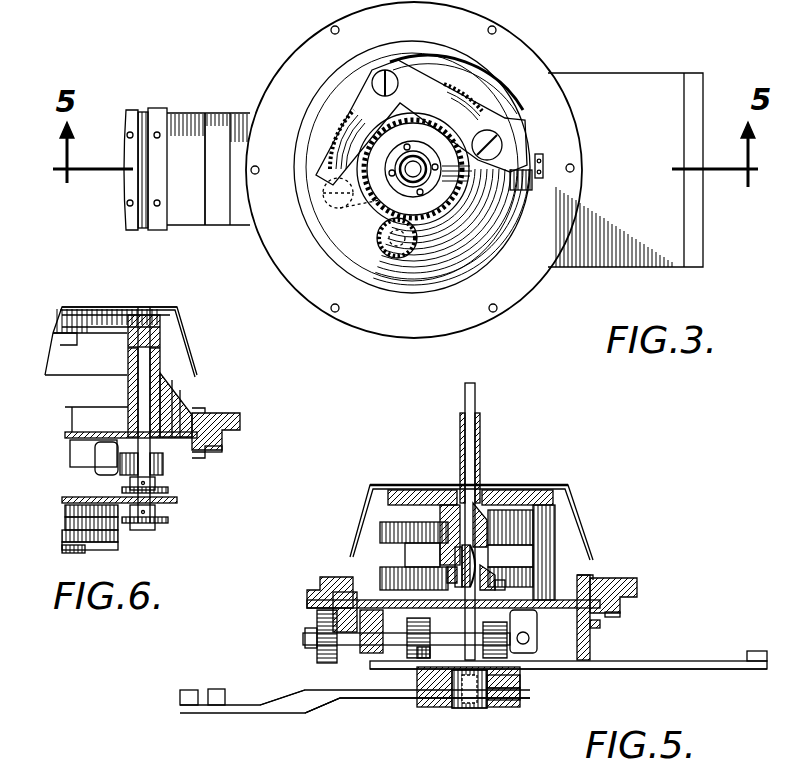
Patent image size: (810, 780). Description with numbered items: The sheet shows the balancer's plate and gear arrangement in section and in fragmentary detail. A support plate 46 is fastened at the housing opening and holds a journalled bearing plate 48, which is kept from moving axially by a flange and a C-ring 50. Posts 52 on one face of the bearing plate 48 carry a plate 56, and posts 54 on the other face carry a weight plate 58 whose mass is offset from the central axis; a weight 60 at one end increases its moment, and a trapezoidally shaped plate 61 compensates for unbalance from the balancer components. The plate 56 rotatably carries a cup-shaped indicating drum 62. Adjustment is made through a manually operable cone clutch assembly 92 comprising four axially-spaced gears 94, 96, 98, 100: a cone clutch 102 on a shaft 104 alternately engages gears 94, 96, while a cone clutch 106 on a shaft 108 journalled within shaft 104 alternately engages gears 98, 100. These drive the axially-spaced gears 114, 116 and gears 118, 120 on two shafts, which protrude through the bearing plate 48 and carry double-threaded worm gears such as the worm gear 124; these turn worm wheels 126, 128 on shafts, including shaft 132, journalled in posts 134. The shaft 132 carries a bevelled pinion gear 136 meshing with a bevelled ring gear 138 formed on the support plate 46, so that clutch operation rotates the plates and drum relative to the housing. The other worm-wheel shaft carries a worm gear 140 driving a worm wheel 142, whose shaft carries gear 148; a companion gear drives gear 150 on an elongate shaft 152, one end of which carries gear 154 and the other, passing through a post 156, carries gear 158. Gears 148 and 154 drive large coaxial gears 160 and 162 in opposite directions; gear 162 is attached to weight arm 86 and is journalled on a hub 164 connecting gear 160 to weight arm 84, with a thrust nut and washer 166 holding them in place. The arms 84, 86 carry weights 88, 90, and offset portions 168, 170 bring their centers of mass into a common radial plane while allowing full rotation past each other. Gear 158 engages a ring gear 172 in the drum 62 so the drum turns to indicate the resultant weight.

In FIG. 3, the support plate 46 is at (523, 38).
In FIG. 6, the support plate 46 is at (238, 415).
In FIG. 5, the support plate 46 is at (635, 577).
In FIG. 3, the bearing plate 48 is at (497, 82).
In FIG. 6, the bearing plate 48 is at (205, 460).
In FIG. 5, the bearing plate 48 is at (600, 627).
In FIG. 3, the C-ring 50 is at (540, 154).
In FIG. 6, the C-ring 50 is at (200, 412).
In FIG. 5, the C-ring 50 is at (593, 575).
In FIG. 3, the posts 52 is at (447, 50).
In FIG. 5, the posts 52 is at (560, 540).
In FIG. 5, the posts 54 is at (590, 650).
In FIG. 3, the plate 56 is at (364, 111).
In FIG. 6, the plate 56 is at (77, 334).
In FIG. 5, the plate 56 is at (567, 484).
In FIG. 3, the weight plate 58 is at (625, 170).
In FIG. 6, the weight plate 58 is at (175, 500).
In FIG. 5, the weight plate 58 is at (705, 661).
In FIG. 3, the weight 60 is at (684, 97).
In FIG. 5, the weight 60 is at (757, 645).
In FIG. 5, the trapezoidally shaped plate 61 is at (610, 670).
In FIG. 3, the indicating drum 62 is at (310, 236).
In FIG. 6, the indicating drum 62 is at (193, 333).
In FIG. 5, the indicating drum 62 is at (578, 498).
In FIG. 3, the weight arm 84 is at (141, 231).
In FIG. 6, the weight arm 84 is at (115, 545).
In FIG. 5, the weight arm 84 is at (377, 703).
In FIG. 3, the weight arm 86 is at (185, 226).
In FIG. 6, the weight arm 86 is at (115, 532).
In FIG. 5, the weight arm 86 is at (385, 690).
In FIG. 3, the weight 88 is at (128, 110).
In FIG. 5, the weight 88 is at (190, 690).
In FIG. 3, the weight 90 is at (165, 108).
In FIG. 5, the weight 90 is at (220, 689).
In FIG. 5, the cone clutch assembly 92 is at (452, 477).
In FIG. 5, the gear 94 is at (448, 517).
In FIG. 5, the gear 96 is at (487, 535).
In FIG. 5, the gear 98 is at (455, 560).
In FIG. 5, the gear 100 is at (500, 583).
In FIG. 5, the cone clutch 102 is at (482, 520).
In FIG. 3, the shaft 104 is at (412, 186).
In FIG. 5, the shaft 104 is at (481, 427).
In FIG. 5, the cone clutch 106 is at (487, 588).
In FIG. 3, the shaft 108 is at (417, 162).
In FIG. 5, the shaft 108 is at (476, 392).
In FIG. 3, the gear 114 is at (473, 102).
In FIG. 5, the gear 114 is at (510, 538).
In FIG. 5, the gear 116 is at (510, 583).
In FIG. 3, the gear 118 is at (330, 139).
In FIG. 5, the gear 118 is at (380, 527).
In FIG. 5, the gear 120 is at (397, 562).
In FIG. 5, the worm gear 124 is at (432, 645).
In FIG. 5, the worm wheel 126 is at (538, 645).
In FIG. 5, the worm wheel 128 is at (432, 655).
In FIG. 6, the shaft 132 is at (75, 470).
In FIG. 5, the shaft 132 is at (370, 645).
In FIG. 6, the posts 134 is at (108, 475).
In FIG. 5, the posts 134 is at (353, 655).
In FIG. 5, the bevelled pinion gear 136 is at (317, 668).
In FIG. 6, the bevelled ring gear 138 is at (223, 448).
In FIG. 5, the bevelled ring gear 138 is at (621, 615).
In FIG. 6, the worm gear 140 is at (152, 458).
In FIG. 5, the worm gear 140 is at (440, 630).
In FIG. 6, the worm wheel 142 is at (163, 468).
In FIG. 6, the gear 148 is at (168, 520).
In FIG. 6, the gear 150 is at (168, 490).
In FIG. 6, the elongate shaft 152 is at (132, 390).
In FIG. 6, the gear 154 is at (158, 530).
In FIG. 6, the post 156 is at (128, 372).
In FIG. 3, the gear 158 is at (424, 232).
In FIG. 6, the gear 158 is at (173, 307).
In FIG. 6, the gear 160 is at (60, 508).
In FIG. 5, the gear 160 is at (522, 685).
In FIG. 6, the gear 162 is at (60, 522).
In FIG. 5, the gear 162 is at (522, 698).
In FIG. 5, the hub 164 is at (442, 707).
In FIG. 6, the thrust nut and washer 166 is at (84, 553).
In FIG. 5, the thrust nut and washer 166 is at (480, 709).
In FIG. 5, the offset portion 168 is at (313, 713).
In FIG. 3, the offset portion 170 is at (210, 211).
In FIG. 5, the offset portion 170 is at (282, 694).
In FIG. 3, the ring gear 172 is at (455, 202).
In FIG. 6, the ring gear 172 is at (128, 330).
In FIG. 5, the ring gear 172 is at (417, 488).